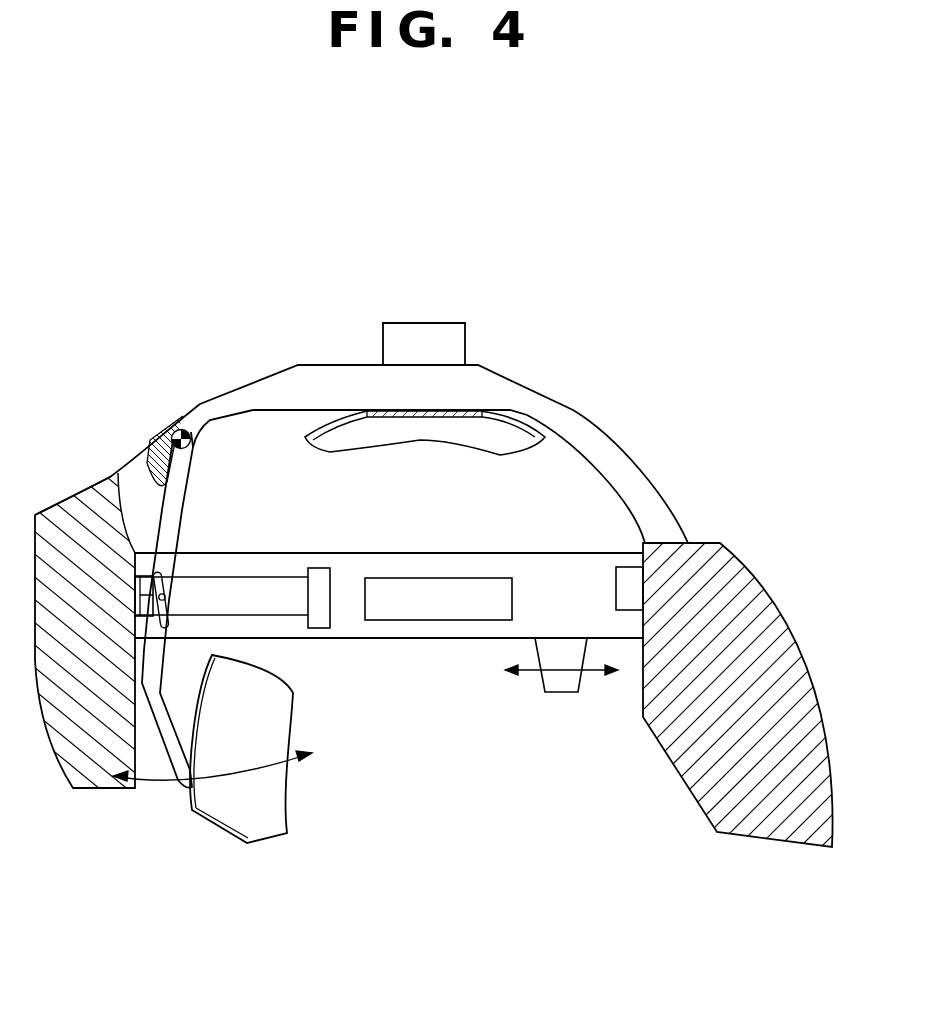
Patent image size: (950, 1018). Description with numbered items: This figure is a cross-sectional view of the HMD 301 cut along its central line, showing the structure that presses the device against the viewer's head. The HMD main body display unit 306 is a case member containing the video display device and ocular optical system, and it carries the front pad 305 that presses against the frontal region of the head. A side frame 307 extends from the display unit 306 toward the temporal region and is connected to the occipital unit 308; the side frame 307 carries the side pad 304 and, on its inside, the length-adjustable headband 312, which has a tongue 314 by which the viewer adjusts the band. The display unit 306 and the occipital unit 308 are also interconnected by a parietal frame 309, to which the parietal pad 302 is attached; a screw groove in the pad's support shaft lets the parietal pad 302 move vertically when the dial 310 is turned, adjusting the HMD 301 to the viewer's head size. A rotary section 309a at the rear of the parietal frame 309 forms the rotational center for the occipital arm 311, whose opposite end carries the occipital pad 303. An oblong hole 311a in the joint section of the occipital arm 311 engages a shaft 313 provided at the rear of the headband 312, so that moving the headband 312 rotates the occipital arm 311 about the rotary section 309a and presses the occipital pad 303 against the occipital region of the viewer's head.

The HMD 301 is at (497, 232).
The parietal pad 302 is at (513, 442).
The occipital pad 303 is at (258, 815).
The side pad 304 is at (440, 602).
The front pad 305 is at (628, 580).
The HMD main body display unit 306 is at (740, 812).
The side frame 307 is at (558, 550).
The occipital unit 308 is at (65, 500).
The parietal frame 309 is at (314, 385).
The rotary section 309a is at (183, 430).
The dial 310 is at (428, 338).
The occipital arm 311 is at (182, 490).
The oblong hole 311a is at (173, 610).
The headband 312 is at (282, 605).
The shaft 313 is at (170, 610).
The tongue 314 is at (562, 680).